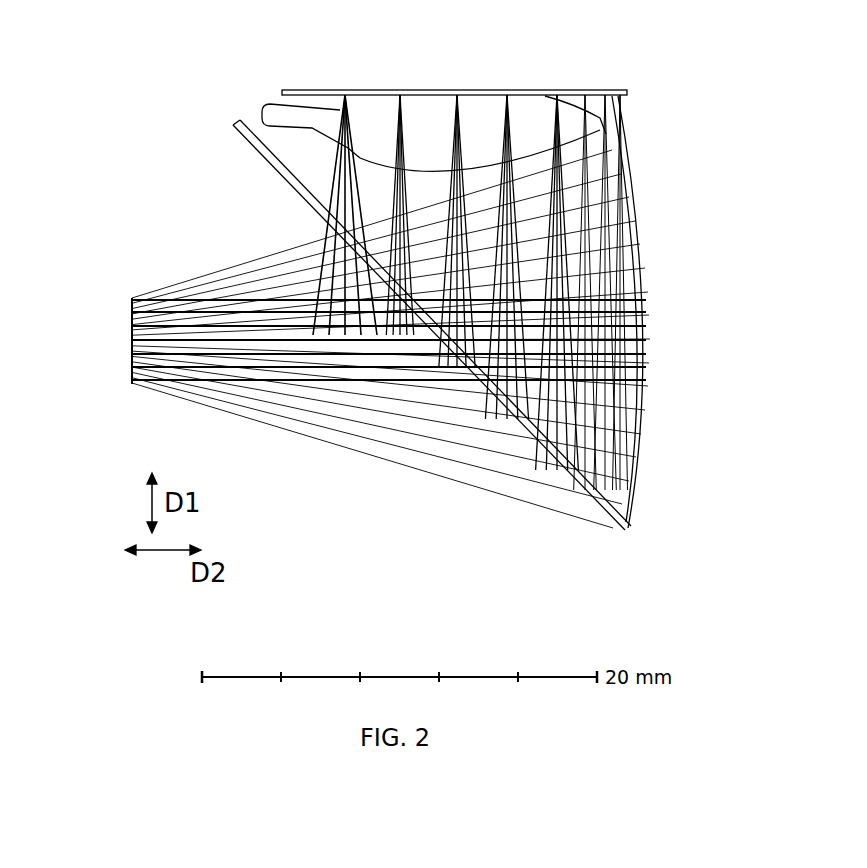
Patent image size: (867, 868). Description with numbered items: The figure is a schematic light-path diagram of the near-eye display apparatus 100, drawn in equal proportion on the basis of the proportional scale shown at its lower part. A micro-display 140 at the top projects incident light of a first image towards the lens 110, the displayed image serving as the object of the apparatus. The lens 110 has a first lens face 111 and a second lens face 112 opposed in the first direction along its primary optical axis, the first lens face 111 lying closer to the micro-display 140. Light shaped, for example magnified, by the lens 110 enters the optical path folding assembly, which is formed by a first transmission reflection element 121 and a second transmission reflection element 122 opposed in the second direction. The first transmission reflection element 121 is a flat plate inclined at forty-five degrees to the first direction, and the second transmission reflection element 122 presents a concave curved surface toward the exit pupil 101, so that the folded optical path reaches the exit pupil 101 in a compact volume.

The near-eye display apparatus 100 is at (684, 30).
The exit pupil 101 is at (128, 338).
The lens 110 is at (325, 127).
The first lens face 111 is at (580, 108).
The second lens face 112 is at (595, 136).
The first transmission reflection element 121 is at (250, 150).
The second transmission reflection element 122 is at (630, 178).
The micro-display 140 is at (306, 92).